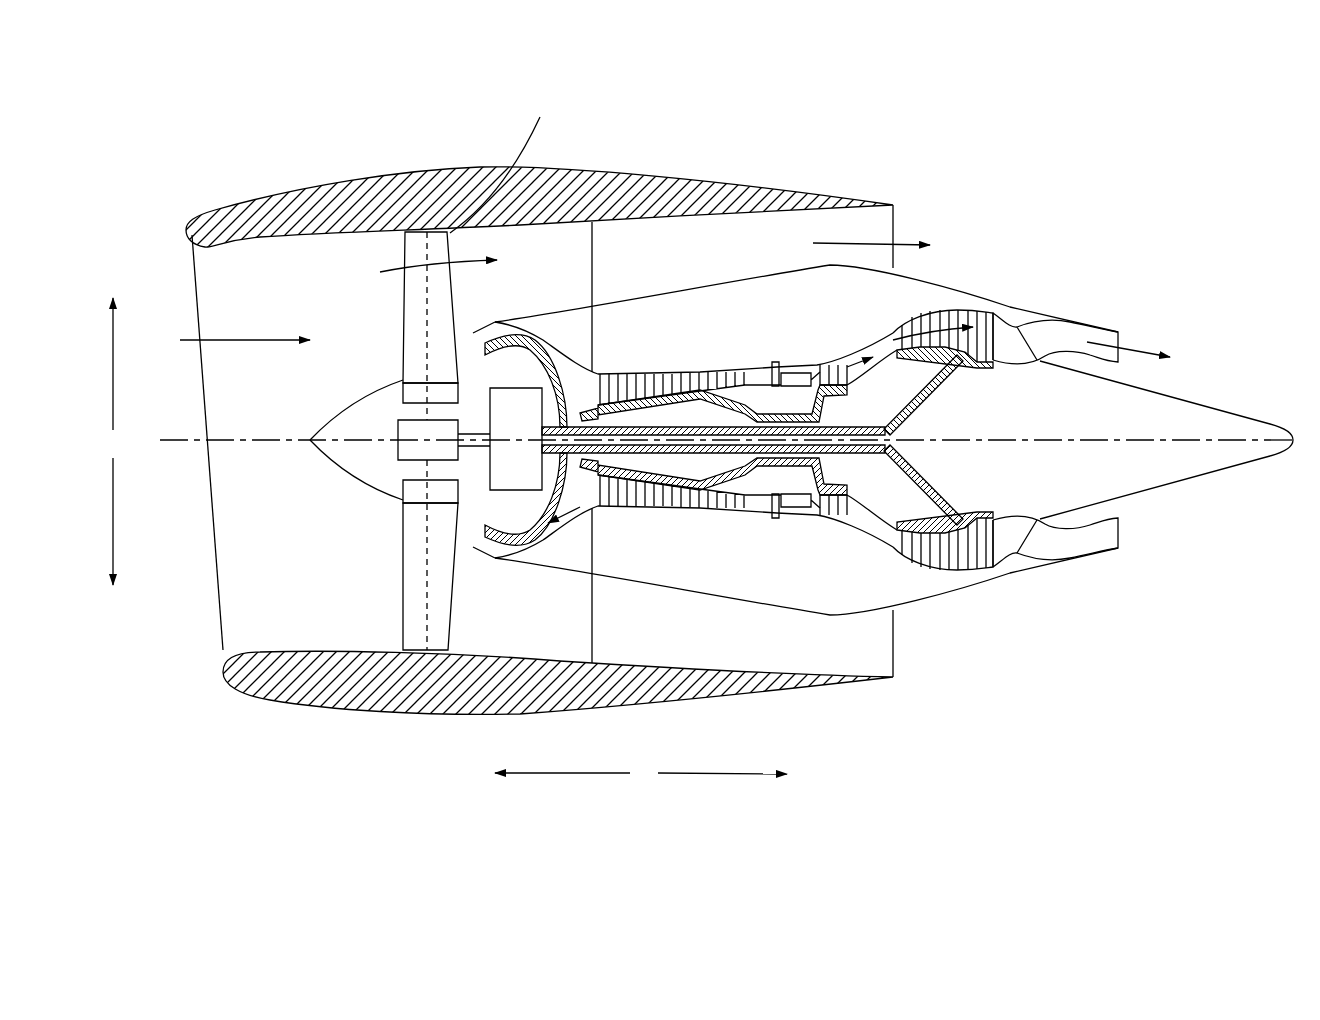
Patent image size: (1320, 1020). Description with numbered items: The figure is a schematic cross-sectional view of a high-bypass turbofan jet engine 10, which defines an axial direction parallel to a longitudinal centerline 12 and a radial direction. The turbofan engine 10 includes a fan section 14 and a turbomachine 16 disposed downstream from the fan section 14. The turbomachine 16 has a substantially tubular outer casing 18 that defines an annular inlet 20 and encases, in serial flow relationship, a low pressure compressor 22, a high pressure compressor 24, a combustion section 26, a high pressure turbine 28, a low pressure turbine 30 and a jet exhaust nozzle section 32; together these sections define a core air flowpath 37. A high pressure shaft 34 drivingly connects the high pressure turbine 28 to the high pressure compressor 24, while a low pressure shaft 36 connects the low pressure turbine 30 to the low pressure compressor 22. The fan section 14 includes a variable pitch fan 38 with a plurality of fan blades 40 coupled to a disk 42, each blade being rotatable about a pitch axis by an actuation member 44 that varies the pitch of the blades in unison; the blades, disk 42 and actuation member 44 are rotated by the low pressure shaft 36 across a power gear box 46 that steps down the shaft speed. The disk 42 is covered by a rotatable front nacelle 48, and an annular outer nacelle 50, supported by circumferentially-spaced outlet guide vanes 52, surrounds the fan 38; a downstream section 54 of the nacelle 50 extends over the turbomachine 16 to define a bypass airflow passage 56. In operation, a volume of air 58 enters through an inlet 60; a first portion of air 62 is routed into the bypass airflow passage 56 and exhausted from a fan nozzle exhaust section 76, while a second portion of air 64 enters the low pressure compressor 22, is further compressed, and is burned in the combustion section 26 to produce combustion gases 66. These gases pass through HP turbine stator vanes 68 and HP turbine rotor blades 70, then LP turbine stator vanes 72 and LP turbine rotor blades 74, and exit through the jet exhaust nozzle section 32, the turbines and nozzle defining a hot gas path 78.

The turbofan jet engine 10 is at (1035, 187).
The longitudinal centerline 12 is at (1232, 440).
The fan section 14 is at (326, 366).
The turbomachine 16 is at (883, 418).
The outer casing 18 is at (753, 603).
The annular inlet 20 is at (503, 545).
The low pressure compressor 22 is at (540, 505).
The high pressure compressor 24 is at (622, 490).
The combustion section 26 is at (793, 517).
The high pressure turbine 28 is at (917, 505).
The low pressure turbine 30 is at (973, 573).
The jet exhaust nozzle section 32 is at (1037, 560).
The high pressure shaft 34 is at (813, 402).
The low pressure shaft 36 is at (917, 413).
The core air flowpath 37 is at (592, 520).
The variable pitch fan 38 is at (326, 441).
The fan blades 40 is at (400, 593).
The disk 42 is at (403, 397).
The actuation member 44 is at (400, 422).
The power gear box 46 is at (553, 358).
The front nacelle 48 is at (400, 423).
The outer nacelle 50 is at (517, 459).
The outlet guide vanes 52 is at (592, 250).
The downstream section 54 is at (813, 195).
The bypass airflow passage 56 is at (711, 264).
The volume of air 58 is at (240, 340).
The inlet 60 is at (220, 650).
The first portion of air 62 is at (413, 248).
The second portion of air 64 is at (485, 320).
The combustion gases 66 is at (947, 330).
The HP turbine stator vanes 68 is at (808, 513).
The HP turbine rotor blades 70 is at (877, 480).
The LP turbine stator vanes 72 is at (900, 553).
The LP turbine rotor blades 74 is at (912, 560).
The fan nozzle exhaust section 76 is at (882, 228).
The hot gas path 78 is at (887, 347).